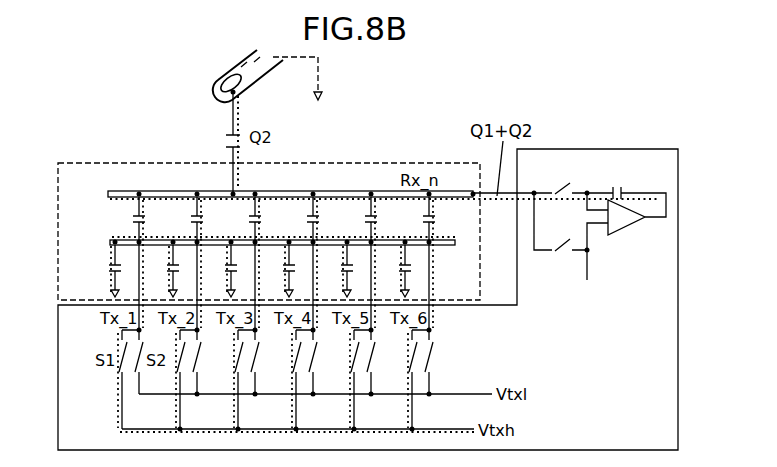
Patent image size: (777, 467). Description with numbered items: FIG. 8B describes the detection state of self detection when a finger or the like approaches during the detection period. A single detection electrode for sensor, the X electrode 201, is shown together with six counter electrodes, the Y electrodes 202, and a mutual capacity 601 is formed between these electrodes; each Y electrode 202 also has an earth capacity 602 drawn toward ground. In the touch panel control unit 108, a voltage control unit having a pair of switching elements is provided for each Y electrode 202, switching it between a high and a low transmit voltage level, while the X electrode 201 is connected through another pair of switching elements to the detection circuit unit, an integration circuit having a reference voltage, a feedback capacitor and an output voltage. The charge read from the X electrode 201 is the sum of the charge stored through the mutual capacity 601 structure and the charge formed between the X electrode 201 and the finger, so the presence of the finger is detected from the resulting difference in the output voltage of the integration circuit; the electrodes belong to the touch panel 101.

The touch panel 101 is at (76, 163).
The X electrode 201 is at (145, 190).
The Y electrode 202 is at (112, 240).
The mutual capacity 601 is at (148, 219).
The parasitic capacitance 602 is at (108, 265).
The touch panel control unit 108 is at (668, 178).